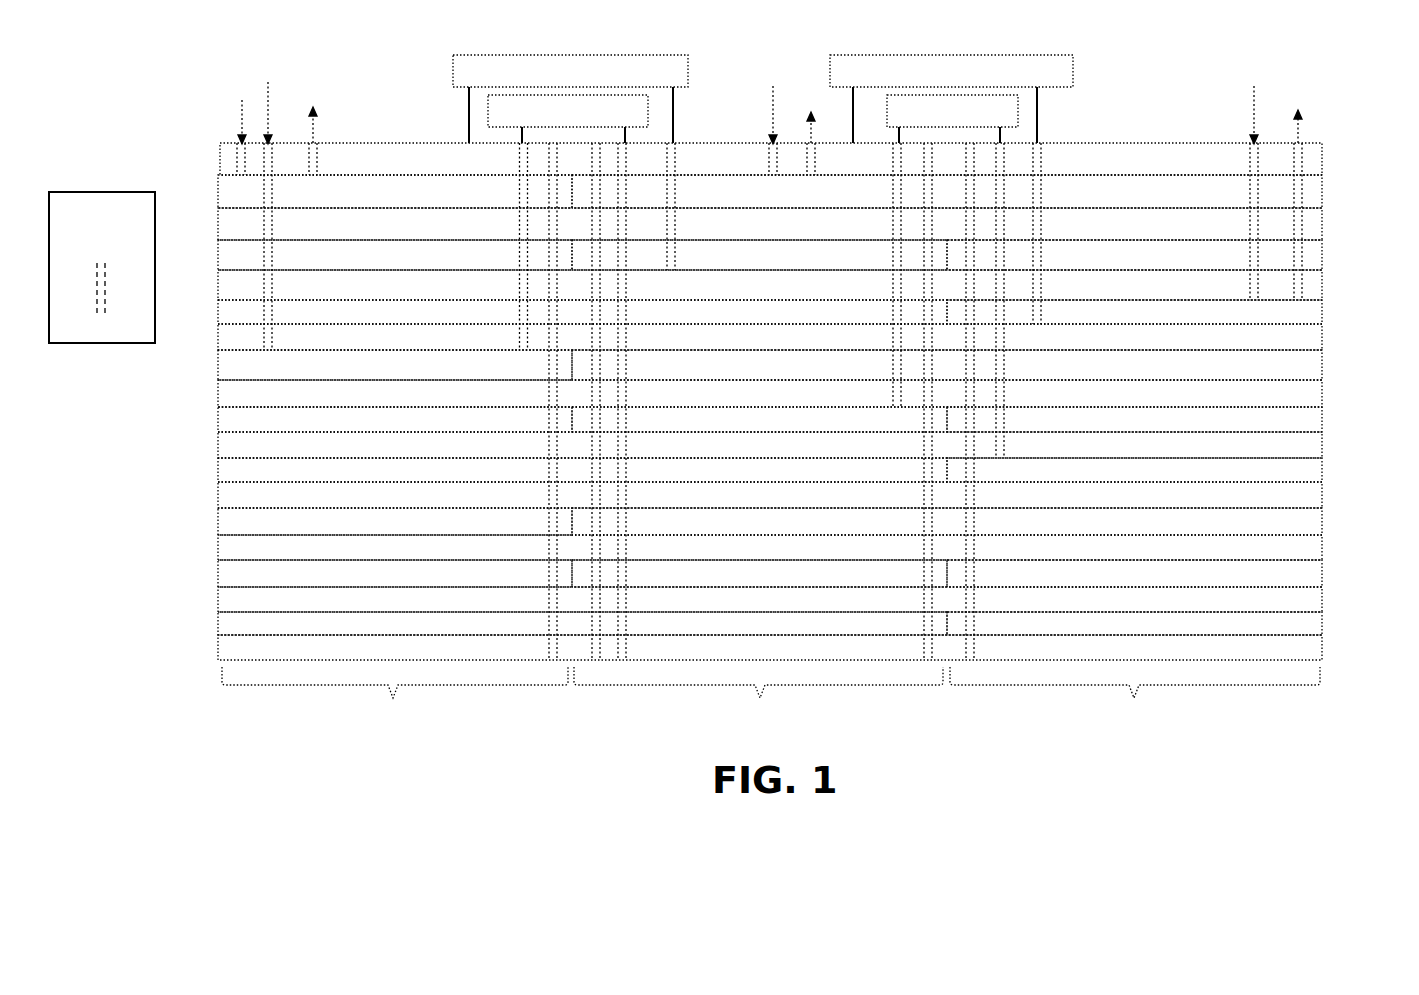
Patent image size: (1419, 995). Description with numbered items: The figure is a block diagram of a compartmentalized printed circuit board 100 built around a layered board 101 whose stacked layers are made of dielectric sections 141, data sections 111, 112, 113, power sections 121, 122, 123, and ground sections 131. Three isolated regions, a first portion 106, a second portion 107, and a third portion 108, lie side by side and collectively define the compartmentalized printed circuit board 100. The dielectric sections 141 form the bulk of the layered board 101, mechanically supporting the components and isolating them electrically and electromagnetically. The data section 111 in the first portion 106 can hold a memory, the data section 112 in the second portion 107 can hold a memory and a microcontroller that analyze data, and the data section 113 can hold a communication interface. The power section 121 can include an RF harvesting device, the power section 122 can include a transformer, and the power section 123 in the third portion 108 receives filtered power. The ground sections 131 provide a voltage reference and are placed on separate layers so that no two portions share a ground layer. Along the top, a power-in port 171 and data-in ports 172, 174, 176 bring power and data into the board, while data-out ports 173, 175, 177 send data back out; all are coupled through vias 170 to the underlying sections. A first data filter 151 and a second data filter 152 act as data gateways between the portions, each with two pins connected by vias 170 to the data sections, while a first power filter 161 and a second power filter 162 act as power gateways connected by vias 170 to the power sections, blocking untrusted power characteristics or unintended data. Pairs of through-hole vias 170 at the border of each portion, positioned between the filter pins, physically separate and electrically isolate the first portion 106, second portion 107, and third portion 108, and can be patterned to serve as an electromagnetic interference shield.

The compartmentalized printed circuit board 100 is at (692, 346).
The layered board 101 is at (1327, 143).
The first portion 106 is at (395, 697).
The second portion 107 is at (758, 697).
The third portion 108 is at (1135, 697).
The data section 111 is at (395, 191).
The data section 112 is at (759, 255).
The data section 113 is at (1134, 312).
The power section 121 is at (395, 365).
The power section 122 is at (759, 419).
The power section 123 is at (1134, 470).
The ground section 131 is at (312, 518).
The dielectric section 141 is at (312, 622).
The first data filter 151 is at (570, 99).
The second data filter 152 is at (951, 99).
The first power filter 161 is at (568, 119).
The second power filter 162 is at (952, 119).
The vias 170 is at (545, 401).
The power-in port 171 is at (268, 196).
The data-in port 172 is at (224, 131).
The data-out port 173 is at (335, 131).
The data-in port 174 is at (771, 105).
The data-out port 175 is at (815, 134).
The data-in port 176 is at (1252, 168).
The data-out port 177 is at (1304, 180).